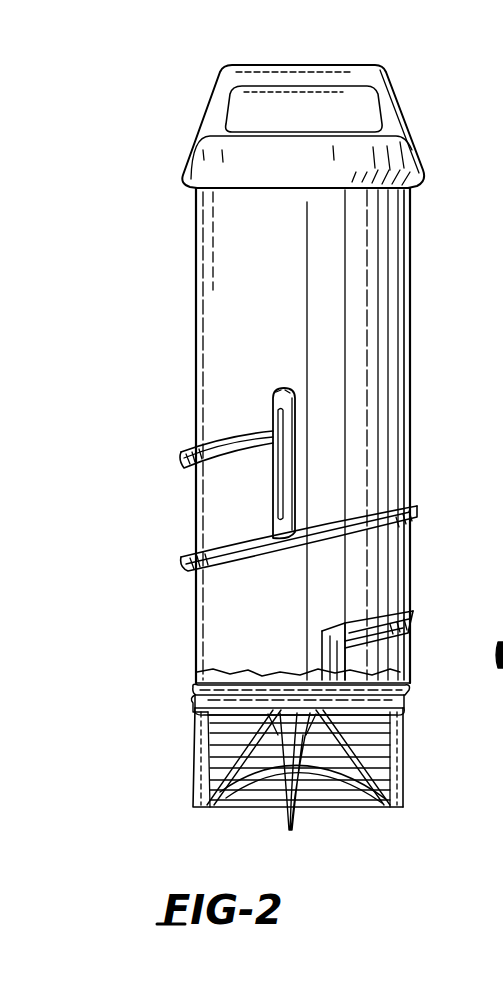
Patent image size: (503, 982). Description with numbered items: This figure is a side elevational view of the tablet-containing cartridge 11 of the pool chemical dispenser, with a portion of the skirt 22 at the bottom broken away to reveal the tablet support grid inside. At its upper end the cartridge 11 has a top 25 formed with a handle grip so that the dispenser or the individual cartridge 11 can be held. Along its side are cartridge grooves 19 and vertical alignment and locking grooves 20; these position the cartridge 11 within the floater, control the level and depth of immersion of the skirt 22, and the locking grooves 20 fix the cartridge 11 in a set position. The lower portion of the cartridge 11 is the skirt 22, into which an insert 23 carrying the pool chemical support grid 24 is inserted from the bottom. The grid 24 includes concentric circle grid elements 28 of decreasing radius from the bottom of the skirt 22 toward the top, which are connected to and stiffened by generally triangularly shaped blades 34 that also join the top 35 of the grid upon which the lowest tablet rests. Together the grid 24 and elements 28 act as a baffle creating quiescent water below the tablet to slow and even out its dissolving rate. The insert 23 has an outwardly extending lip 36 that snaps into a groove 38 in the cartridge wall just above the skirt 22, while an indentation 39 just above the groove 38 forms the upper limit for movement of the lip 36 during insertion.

The cartridge 11 is at (412, 258).
The cartridge grooves 19 is at (181, 455).
The vertical alignment and locking grooves 20 is at (297, 413).
The skirt 22 is at (194, 748).
The insert 23 is at (378, 757).
The pool chemical support grid 24 is at (243, 794).
The top 25 is at (400, 91).
The concentric circle grid elements 28 is at (290, 829).
The triangularly shaped blades 34 is at (405, 830).
The top of the tablet support grid 35 is at (197, 672).
The lip 36 is at (197, 694).
The groove 38 is at (408, 708).
The indentation 39 is at (408, 690).